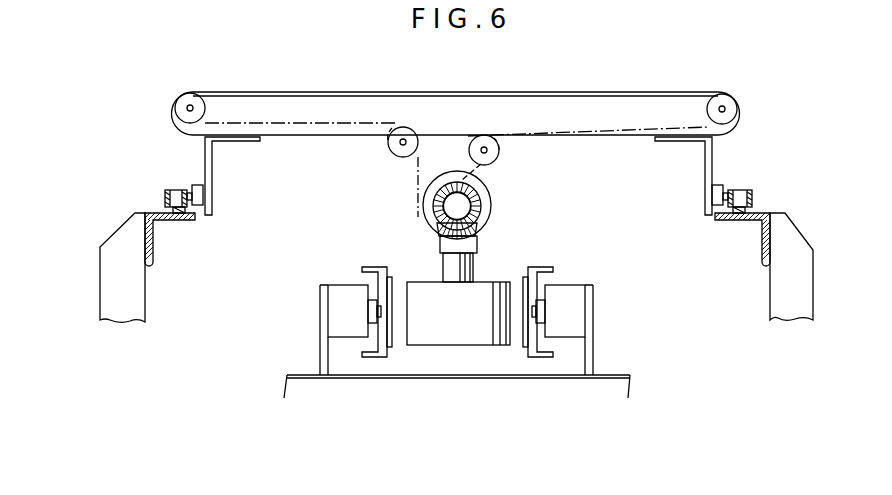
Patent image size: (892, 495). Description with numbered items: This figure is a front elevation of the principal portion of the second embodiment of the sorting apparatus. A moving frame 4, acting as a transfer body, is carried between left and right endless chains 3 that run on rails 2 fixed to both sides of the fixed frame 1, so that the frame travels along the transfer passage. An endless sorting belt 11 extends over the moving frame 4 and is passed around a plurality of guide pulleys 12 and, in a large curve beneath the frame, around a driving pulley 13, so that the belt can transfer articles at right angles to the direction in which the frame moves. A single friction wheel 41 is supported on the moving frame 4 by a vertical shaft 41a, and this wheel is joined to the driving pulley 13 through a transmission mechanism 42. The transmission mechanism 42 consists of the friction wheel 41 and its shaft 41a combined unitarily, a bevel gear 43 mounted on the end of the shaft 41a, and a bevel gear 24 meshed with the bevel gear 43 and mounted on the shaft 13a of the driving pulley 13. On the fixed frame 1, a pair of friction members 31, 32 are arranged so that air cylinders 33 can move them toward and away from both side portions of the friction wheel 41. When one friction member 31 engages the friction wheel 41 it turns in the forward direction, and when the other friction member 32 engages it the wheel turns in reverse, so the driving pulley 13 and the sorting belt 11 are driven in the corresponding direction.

The fixed frame 1 is at (778, 291).
The rails 2 is at (160, 215).
The endless chains 3 is at (172, 190).
The moving frame 4 is at (735, 128).
The sorting belt 11 is at (622, 96).
The guide pulleys 12 is at (178, 100).
The driving pulley 13 is at (486, 200).
The shaft of the driving pulley 13a is at (452, 209).
The bevel gear 24 is at (482, 208).
The friction member 31 is at (391, 340).
The friction member 32 is at (524, 340).
The air cylinders 33 is at (345, 340).
The friction wheel 41 is at (441, 338).
The vertical shaft 41a is at (447, 268).
The transmission mechanism 42 is at (392, 224).
The bevel gear 43 is at (476, 227).